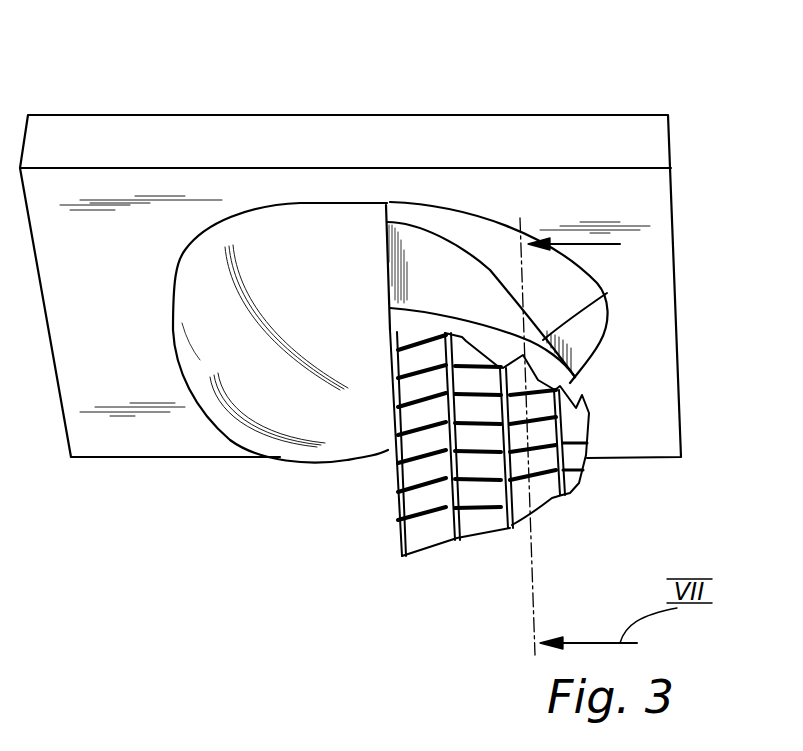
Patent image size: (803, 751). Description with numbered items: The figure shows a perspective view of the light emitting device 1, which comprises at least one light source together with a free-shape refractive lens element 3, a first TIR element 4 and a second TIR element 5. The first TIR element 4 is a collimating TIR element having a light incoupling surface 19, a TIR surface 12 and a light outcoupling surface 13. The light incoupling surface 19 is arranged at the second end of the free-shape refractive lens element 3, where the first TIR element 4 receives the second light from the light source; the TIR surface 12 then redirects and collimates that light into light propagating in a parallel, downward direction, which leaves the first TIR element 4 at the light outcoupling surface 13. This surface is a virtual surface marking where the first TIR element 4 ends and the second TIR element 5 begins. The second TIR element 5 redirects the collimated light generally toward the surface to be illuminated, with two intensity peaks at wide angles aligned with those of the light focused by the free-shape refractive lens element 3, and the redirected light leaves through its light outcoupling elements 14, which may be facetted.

The light emitting device 1 is at (122, 528).
The free-shape refractive lens element 3 is at (322, 420).
The first TIR element 4 is at (488, 273).
The second TIR element 5 is at (556, 524).
The TIR surface 12 is at (470, 347).
The light outcoupling surface 13 is at (502, 365).
The light outcoupling elements 14 is at (475, 523).
The light incoupling surface 19 is at (385, 272).